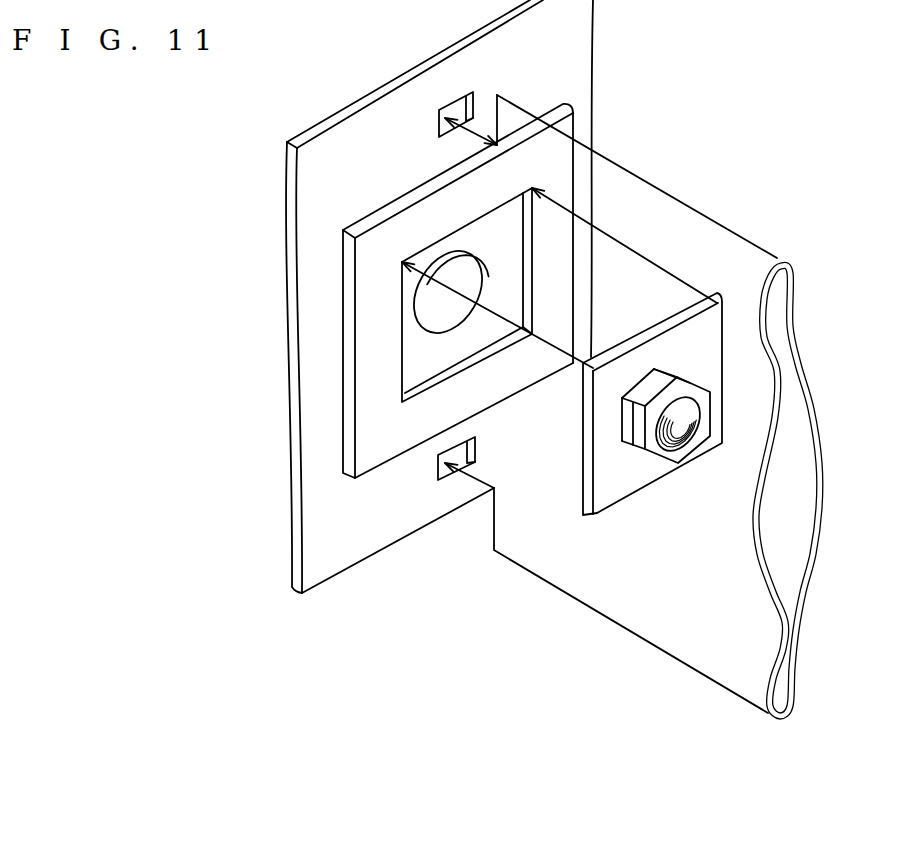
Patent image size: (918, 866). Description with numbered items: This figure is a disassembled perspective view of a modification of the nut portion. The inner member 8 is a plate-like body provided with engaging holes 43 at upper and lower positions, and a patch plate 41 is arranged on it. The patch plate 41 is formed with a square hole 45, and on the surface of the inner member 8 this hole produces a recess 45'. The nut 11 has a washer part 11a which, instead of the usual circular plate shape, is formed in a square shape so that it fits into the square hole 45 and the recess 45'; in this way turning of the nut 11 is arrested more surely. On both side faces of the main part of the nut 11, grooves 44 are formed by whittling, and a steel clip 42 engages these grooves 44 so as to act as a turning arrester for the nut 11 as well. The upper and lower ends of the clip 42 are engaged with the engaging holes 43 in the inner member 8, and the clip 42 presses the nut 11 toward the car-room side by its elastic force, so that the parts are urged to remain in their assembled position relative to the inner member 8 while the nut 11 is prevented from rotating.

The inner member 8 is at (320, 182).
The patch plate 41 is at (367, 320).
The recess 45' is at (372, 335).
The square hole 45 is at (427, 386).
The engaging holes 43 is at (473, 102).
The washer part 11a is at (708, 333).
The grooves 44 is at (625, 438).
The nut 11 is at (668, 462).
The steel clip 42 is at (823, 462).